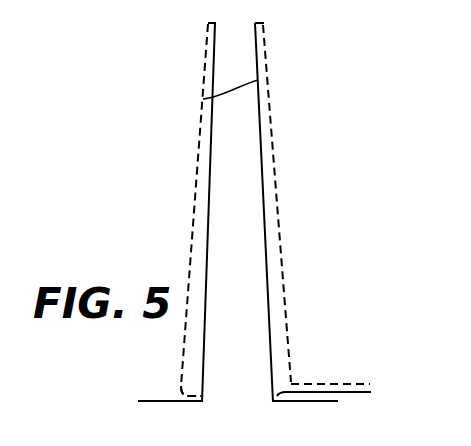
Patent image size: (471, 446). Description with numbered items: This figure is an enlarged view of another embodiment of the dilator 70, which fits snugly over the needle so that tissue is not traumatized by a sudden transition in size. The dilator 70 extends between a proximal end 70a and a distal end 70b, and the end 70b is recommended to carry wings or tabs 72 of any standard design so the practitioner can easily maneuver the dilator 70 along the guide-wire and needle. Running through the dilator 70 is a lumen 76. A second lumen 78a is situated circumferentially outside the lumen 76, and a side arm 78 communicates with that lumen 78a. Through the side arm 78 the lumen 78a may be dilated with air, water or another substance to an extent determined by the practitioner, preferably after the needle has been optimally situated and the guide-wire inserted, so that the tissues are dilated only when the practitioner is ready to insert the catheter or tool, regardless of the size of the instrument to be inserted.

The dilator 70 is at (282, 188).
The proximal end 70a is at (208, 27).
The distal end 70b is at (178, 388).
The wings or tabs 72 is at (150, 403).
The lumen 76 is at (224, 209).
The side arm 78 is at (344, 384).
The lumen 78a is at (201, 122).